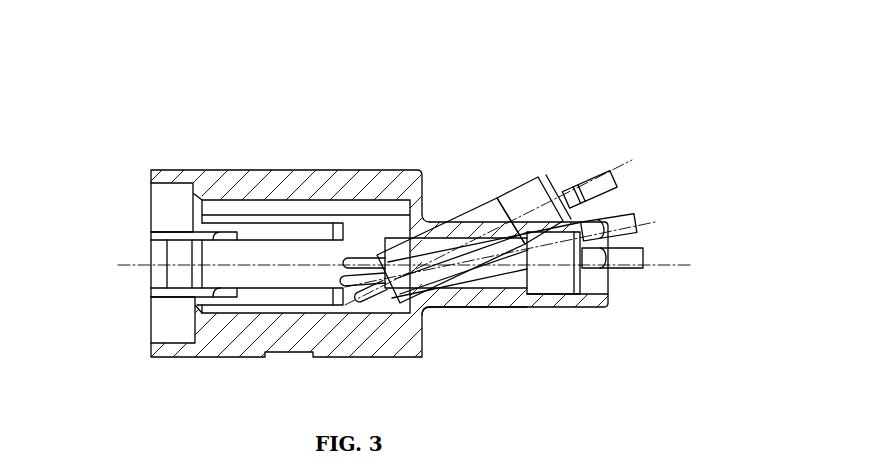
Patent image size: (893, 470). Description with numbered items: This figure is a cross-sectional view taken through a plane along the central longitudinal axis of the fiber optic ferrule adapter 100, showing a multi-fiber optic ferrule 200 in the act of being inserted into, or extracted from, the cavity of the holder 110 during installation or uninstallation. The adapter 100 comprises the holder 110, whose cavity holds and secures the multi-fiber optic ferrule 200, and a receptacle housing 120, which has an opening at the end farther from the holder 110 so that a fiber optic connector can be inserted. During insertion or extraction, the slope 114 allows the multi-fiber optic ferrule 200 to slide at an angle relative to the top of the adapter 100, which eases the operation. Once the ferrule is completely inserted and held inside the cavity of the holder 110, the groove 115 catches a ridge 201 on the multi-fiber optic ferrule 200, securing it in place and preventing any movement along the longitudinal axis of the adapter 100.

The fiber optic ferrule adapter 100 is at (292, 135).
The holder 110 is at (604, 294).
The slope 114 is at (455, 306).
The groove 115 is at (550, 296).
The receptacle housing 120 is at (242, 185).
The multi-fiber optic ferrule 200 is at (470, 185).
The ridge 201 is at (520, 194).